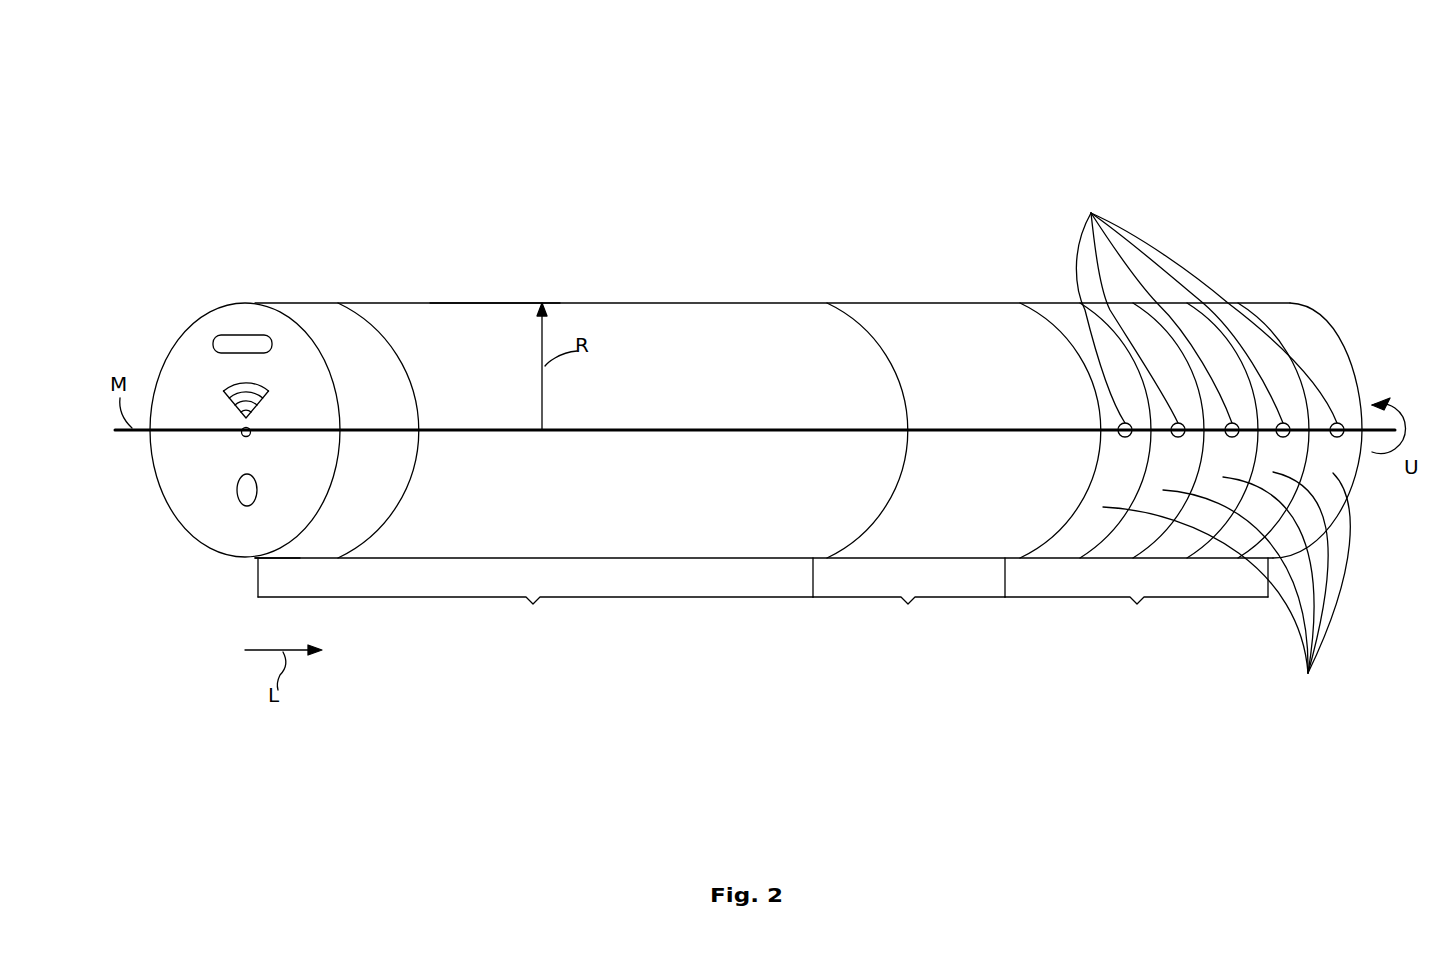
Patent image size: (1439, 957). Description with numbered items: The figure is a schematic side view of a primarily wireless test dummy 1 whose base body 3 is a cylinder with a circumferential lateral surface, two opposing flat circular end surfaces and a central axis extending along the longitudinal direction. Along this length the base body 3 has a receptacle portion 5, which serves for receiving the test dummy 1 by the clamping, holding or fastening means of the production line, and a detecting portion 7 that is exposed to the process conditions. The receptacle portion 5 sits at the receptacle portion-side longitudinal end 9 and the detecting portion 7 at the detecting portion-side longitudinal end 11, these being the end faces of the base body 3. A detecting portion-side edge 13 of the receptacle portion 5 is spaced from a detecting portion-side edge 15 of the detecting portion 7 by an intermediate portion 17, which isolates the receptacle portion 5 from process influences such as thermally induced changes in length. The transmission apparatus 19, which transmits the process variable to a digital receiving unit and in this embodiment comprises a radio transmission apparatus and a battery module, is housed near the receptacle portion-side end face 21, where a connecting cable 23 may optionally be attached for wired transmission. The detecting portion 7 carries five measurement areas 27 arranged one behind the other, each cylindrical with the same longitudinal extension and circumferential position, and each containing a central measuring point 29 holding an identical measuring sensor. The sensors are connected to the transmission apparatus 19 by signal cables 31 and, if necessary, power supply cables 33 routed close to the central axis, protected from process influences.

The test dummy 1 is at (887, 167).
The base body 3 is at (502, 302).
The receptacle portion 5 is at (535, 597).
The detecting portion 7 is at (1174, 470).
The receptacle portion-side longitudinal end 9 is at (253, 560).
The detecting portion-side longitudinal end 11 is at (1322, 323).
The detecting portion-side edge of the receptacle portion 13 is at (873, 330).
The detecting portion-side edge of the detecting portion 15 is at (1050, 318).
The intermediate portion 17 is at (909, 617).
The transmission apparatus 19 is at (320, 325).
The receptacle portion-side end face 21 is at (198, 330).
The connecting cable 23 is at (247, 507).
The measurement areas 27 is at (1226, 590).
The measuring points 29 is at (1206, 305).
The signal cables 31 is at (680, 425).
The power supply cables 33 is at (725, 425).